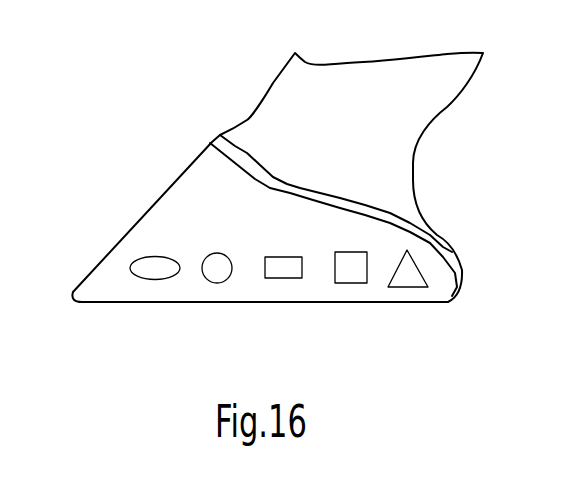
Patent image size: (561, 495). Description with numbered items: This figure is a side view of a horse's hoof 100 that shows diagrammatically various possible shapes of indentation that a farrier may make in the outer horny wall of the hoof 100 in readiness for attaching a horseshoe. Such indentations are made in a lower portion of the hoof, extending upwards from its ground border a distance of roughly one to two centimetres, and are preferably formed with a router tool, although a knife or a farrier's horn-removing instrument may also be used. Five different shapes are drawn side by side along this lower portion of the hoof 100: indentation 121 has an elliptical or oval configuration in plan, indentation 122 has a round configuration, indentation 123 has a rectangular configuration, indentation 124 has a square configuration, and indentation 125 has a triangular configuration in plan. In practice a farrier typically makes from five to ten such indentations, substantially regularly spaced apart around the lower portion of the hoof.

The horse's hoof 100 is at (200, 205).
The indentation 121 is at (160, 268).
The indentation 122 is at (213, 268).
The indentation 123 is at (282, 267).
The indentation 124 is at (353, 268).
The indentation 125 is at (408, 273).